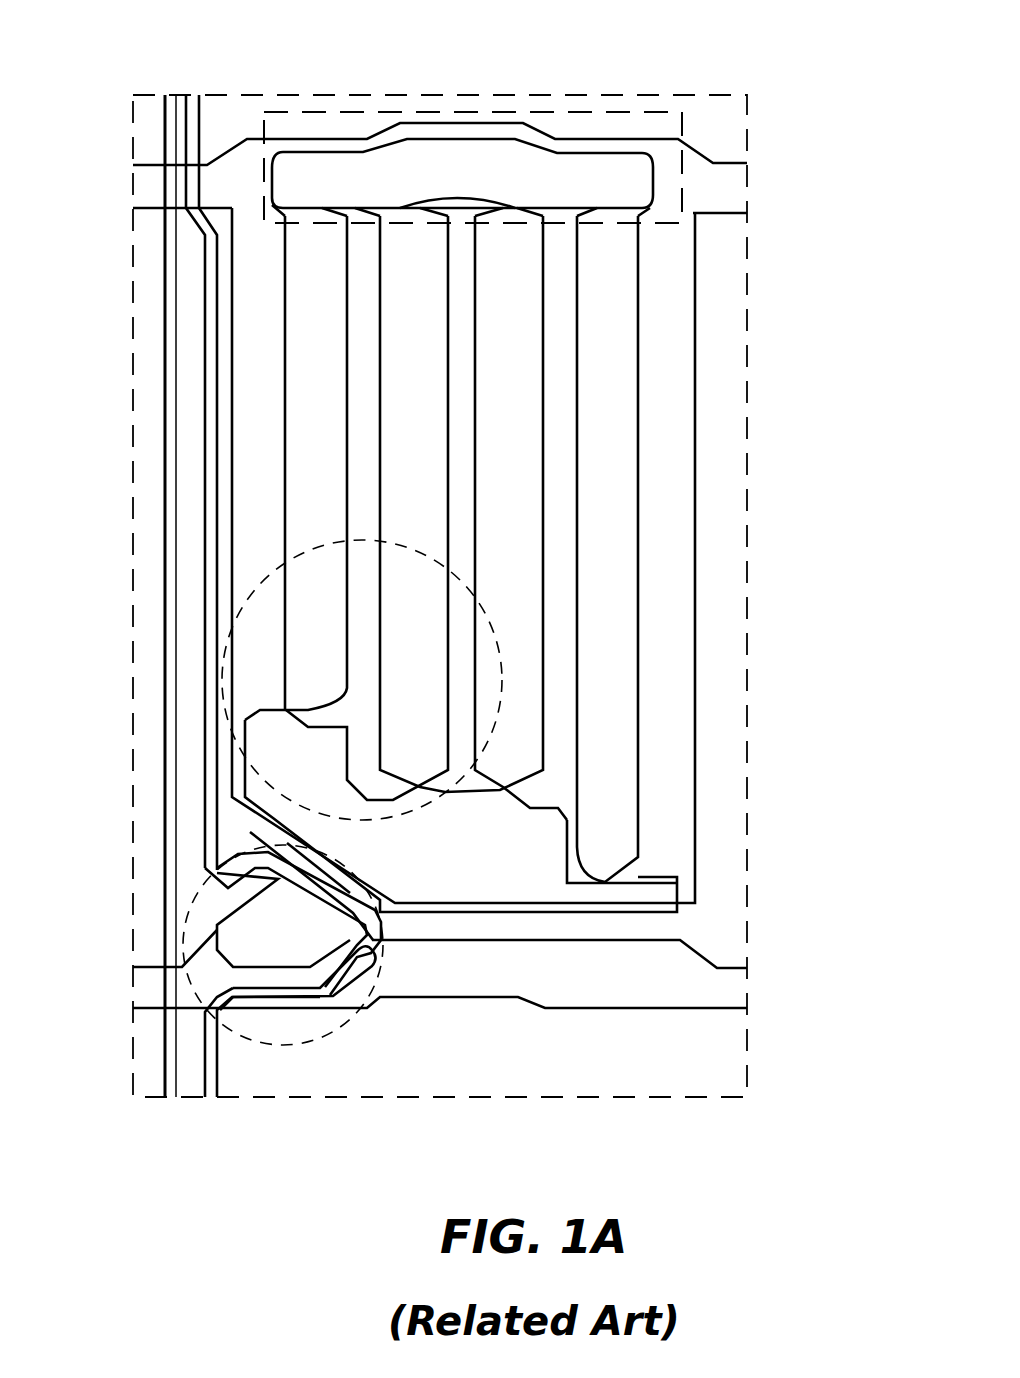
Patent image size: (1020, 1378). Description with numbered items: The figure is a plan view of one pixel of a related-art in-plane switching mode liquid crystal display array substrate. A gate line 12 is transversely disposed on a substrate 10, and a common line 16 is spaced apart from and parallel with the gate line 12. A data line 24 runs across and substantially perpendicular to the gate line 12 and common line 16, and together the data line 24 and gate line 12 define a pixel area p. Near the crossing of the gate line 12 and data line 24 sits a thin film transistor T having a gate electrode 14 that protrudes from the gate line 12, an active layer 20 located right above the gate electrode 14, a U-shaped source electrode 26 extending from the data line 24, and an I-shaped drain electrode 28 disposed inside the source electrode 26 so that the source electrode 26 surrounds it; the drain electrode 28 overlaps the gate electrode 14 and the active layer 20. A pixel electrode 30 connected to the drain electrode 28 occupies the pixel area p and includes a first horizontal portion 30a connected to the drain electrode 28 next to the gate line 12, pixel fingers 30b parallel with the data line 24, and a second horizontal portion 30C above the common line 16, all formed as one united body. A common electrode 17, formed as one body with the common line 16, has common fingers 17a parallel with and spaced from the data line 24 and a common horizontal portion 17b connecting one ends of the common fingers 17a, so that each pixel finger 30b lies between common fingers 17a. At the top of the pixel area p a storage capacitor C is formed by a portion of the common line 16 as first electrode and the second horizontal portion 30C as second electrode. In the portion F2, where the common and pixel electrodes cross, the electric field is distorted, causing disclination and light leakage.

The substrate 10 is at (748, 262).
The gate line 12 is at (663, 1010).
The gate electrode 14 is at (265, 855).
The common line 16 is at (722, 165).
The common electrode 17 is at (840, 855).
The common fingers 17a is at (680, 853).
The common horizontal portion 17b is at (685, 893).
The active layer 20 is at (377, 987).
The data line 24 is at (165, 527).
The source electrode 26 is at (292, 978).
The drain electrode 28 is at (337, 978).
The pixel electrode 30 is at (573, 464).
The first horizontal portion 30a is at (640, 877).
The pixel fingers 30b is at (582, 737).
The second horizontal portion 30C is at (625, 152).
The storage capacitor C is at (525, 112).
The portion F2 is at (497, 637).
The thin film transistor T is at (183, 905).
The pixel area p is at (722, 457).